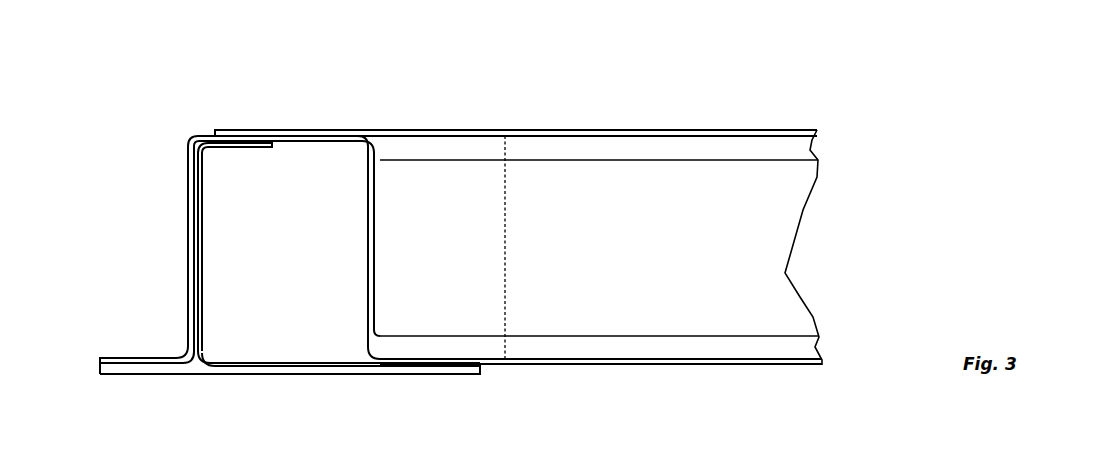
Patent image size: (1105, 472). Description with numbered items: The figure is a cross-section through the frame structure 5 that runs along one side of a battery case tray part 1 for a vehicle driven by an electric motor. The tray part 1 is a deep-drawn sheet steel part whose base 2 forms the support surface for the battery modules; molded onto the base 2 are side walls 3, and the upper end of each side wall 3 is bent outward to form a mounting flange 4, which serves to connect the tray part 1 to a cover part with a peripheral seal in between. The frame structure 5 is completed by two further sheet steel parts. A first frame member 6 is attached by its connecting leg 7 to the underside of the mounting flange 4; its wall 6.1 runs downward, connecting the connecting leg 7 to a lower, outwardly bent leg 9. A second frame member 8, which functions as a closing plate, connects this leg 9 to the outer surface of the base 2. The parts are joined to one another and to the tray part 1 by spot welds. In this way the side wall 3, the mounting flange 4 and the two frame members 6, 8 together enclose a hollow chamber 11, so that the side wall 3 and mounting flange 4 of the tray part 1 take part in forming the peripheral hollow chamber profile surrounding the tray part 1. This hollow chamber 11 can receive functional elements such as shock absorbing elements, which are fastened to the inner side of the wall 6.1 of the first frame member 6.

The tray part 1 is at (645, 119).
The base 2 is at (558, 351).
The side walls 3 is at (383, 244).
The mounting flange 4 is at (305, 126).
The frame structure 5 is at (172, 120).
The first frame member 6 is at (163, 205).
The wall 6.1 is at (185, 246).
The connecting leg 7 is at (233, 148).
The second frame member 8 is at (323, 380).
The leg 9 is at (136, 353).
The hollow chamber 11 is at (295, 275).